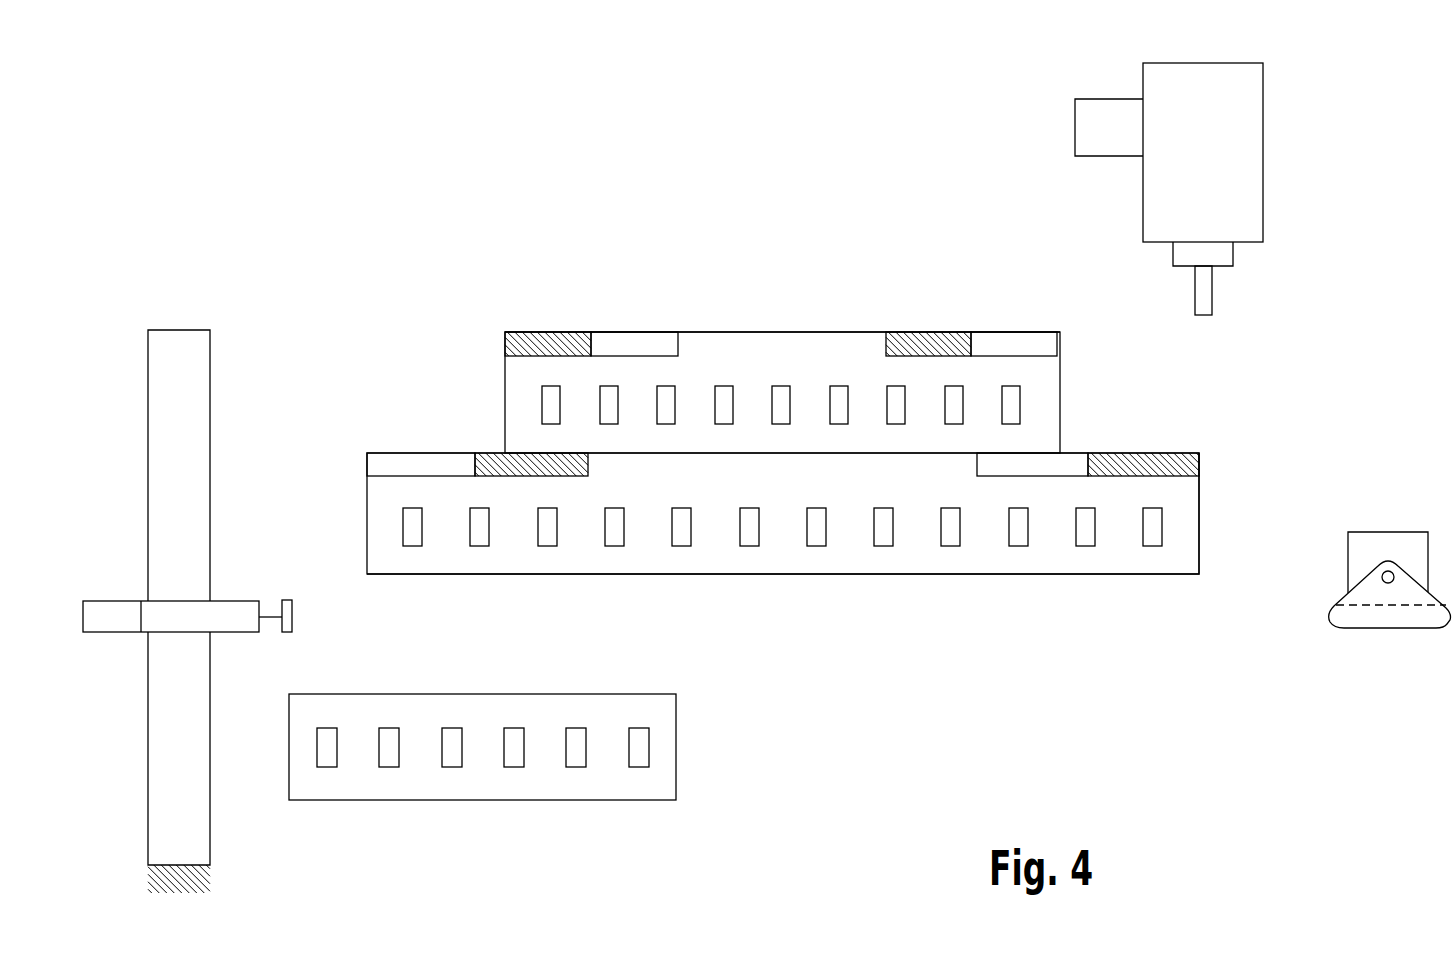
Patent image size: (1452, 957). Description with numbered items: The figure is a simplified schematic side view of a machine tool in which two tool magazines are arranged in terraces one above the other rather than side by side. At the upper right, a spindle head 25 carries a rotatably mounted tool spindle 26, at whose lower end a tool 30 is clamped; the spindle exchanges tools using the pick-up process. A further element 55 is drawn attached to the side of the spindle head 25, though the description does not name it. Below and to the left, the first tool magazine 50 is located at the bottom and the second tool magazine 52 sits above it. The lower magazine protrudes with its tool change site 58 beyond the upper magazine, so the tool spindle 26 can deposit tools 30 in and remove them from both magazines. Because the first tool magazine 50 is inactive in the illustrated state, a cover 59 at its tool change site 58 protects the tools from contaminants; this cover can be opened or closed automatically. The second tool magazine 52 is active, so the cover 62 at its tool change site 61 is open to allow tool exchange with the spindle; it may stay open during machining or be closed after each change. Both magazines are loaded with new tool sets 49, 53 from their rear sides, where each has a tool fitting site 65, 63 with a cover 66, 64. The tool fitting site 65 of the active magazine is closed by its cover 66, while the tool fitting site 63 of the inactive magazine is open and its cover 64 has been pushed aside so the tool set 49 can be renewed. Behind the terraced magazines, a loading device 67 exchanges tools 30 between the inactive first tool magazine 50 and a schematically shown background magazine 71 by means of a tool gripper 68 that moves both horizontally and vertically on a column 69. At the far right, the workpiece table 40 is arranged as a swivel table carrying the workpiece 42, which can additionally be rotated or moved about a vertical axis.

The spindle head 25 is at (1255, 142).
The tool spindle 26 is at (1228, 256).
The tool 30 is at (293, 616).
The workpiece table 40 is at (1414, 624).
The workpiece 42 is at (1388, 540).
The tool set 49 is at (912, 548).
The first tool magazine 50 is at (1182, 564).
The second tool magazine 52 is at (777, 338).
The tool set 53 is at (733, 362).
The motor connector 55 is at (1107, 108).
The tool change site 58 is at (1102, 418).
The cover 59 is at (1180, 438).
The tool change site 61 is at (990, 291).
The cover 62 is at (926, 338).
The tool fitting site 63 is at (477, 418).
The cover 64 is at (485, 452).
The tool fitting site 65 is at (591, 291).
The cover 66 is at (540, 338).
The loading device 67 is at (247, 232).
The tool gripper 68 is at (268, 612).
The column 69 is at (178, 340).
The background magazine 71 is at (657, 790).